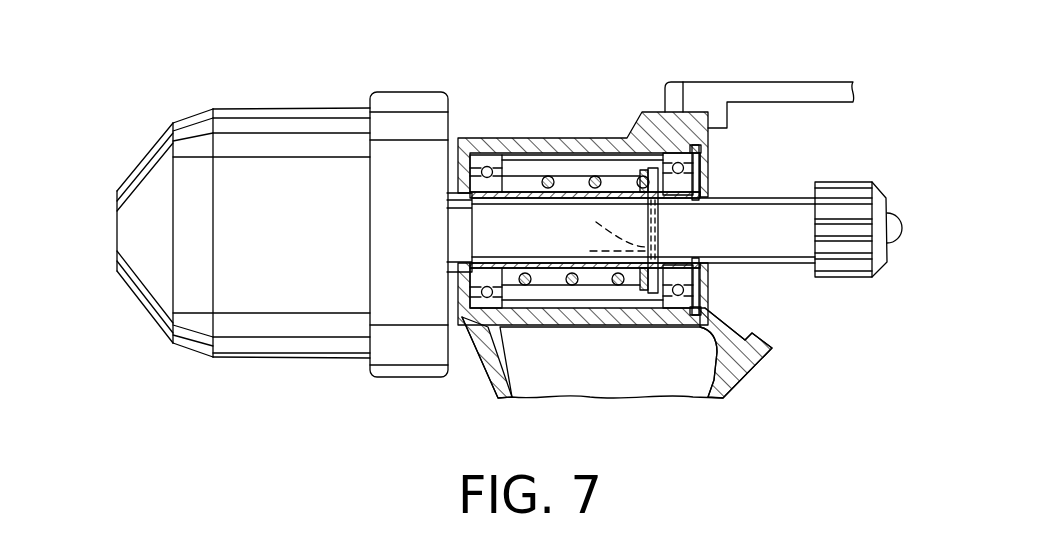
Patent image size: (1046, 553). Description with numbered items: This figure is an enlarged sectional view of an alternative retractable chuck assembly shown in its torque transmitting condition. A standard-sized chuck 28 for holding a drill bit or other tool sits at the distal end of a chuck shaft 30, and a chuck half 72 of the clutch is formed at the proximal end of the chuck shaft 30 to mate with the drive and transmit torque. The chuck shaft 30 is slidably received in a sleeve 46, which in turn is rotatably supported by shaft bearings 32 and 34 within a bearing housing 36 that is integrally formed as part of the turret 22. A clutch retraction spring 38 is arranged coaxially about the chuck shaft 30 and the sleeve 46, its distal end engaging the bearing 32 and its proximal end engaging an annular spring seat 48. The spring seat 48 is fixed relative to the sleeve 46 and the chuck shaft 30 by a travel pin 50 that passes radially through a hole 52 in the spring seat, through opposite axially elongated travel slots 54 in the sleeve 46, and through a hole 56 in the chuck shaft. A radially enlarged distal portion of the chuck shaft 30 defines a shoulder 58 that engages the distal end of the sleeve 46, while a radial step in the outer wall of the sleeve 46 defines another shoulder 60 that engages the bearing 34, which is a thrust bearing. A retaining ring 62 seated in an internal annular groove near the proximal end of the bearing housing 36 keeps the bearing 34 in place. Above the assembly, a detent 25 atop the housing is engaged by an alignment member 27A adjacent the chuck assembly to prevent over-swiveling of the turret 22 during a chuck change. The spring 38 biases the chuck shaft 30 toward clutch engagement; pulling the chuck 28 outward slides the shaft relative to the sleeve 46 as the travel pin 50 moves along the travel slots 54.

The turret 22 is at (733, 393).
The detent 25 is at (718, 82).
The alignment member 27A is at (682, 110).
The chuck 28 is at (298, 246).
The chuck shaft 30 is at (786, 246).
The shaft bearing 32 is at (483, 137).
The shaft bearing 34 is at (680, 308).
The bearing housing 36 is at (575, 310).
The clutch retraction spring 38 is at (593, 172).
The sleeve 46 is at (492, 160).
The annular spring seat 48 is at (650, 125).
The travel pin 50 is at (619, 237).
The hole 52 is at (672, 198).
The travel slots 54 is at (575, 173).
The hole 56 is at (557, 238).
The shoulder 58 is at (484, 252).
The shoulder 60 is at (703, 270).
The retaining ring 62 is at (702, 156).
The chuck half 72 is at (836, 278).